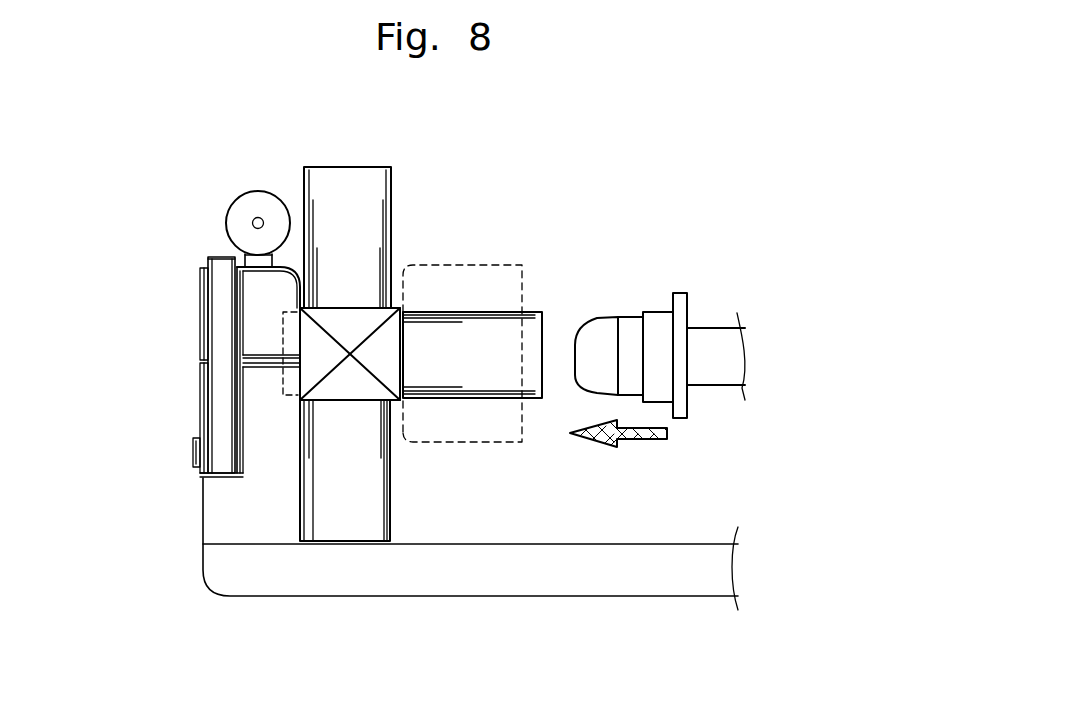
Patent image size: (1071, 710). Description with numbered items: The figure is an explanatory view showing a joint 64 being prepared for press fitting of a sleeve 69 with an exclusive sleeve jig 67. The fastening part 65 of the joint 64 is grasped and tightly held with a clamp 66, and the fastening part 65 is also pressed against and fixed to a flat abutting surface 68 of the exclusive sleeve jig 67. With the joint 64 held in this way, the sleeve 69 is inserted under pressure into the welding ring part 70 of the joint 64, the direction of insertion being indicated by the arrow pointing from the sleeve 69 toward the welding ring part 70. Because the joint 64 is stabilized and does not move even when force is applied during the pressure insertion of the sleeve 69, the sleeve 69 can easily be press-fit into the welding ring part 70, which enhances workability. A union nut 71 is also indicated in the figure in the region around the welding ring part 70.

The joint 64 is at (440, 165).
The fastening part 65 is at (277, 377).
The clamp 66 is at (262, 293).
The exclusive sleeve jig 67 is at (420, 605).
The flat abutting surface 68 is at (300, 495).
The sleeve 69 is at (633, 330).
The welding ring part 70 is at (535, 330).
The union nut 71 is at (497, 442).